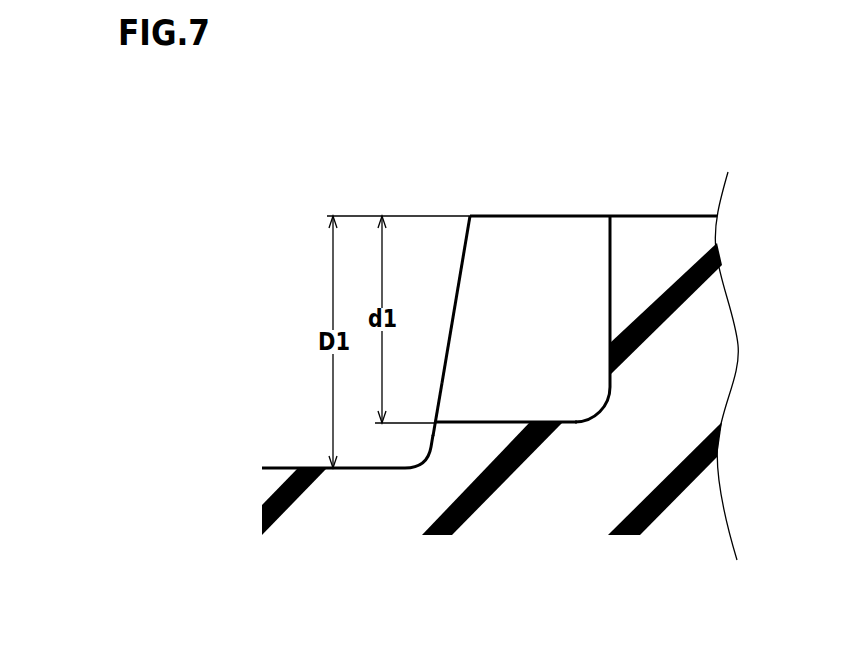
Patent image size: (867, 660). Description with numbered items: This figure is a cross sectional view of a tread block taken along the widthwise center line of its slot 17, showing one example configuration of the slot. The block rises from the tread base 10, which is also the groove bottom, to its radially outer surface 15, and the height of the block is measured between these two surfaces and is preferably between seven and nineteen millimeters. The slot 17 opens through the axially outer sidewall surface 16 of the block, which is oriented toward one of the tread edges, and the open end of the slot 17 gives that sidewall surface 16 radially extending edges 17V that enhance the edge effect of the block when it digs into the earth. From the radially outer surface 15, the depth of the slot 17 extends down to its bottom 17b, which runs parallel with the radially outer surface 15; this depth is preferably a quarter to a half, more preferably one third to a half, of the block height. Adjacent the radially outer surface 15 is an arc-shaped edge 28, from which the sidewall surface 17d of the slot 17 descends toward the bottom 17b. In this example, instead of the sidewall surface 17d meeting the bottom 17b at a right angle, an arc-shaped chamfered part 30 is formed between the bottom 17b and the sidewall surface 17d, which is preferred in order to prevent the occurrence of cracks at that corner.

The tread base 10 is at (300, 468).
The sidewall surface 16 is at (460, 265).
The slot 17 is at (533, 245).
The radially extending edges 17V is at (445, 370).
The bottom of the slot 17b is at (517, 422).
The sidewall surface of the slot 17d is at (610, 250).
The arc-shaped edge 28 is at (610, 216).
The radially outer surface 15 is at (642, 216).
The arc-shaped chamfered part 30 is at (595, 414).